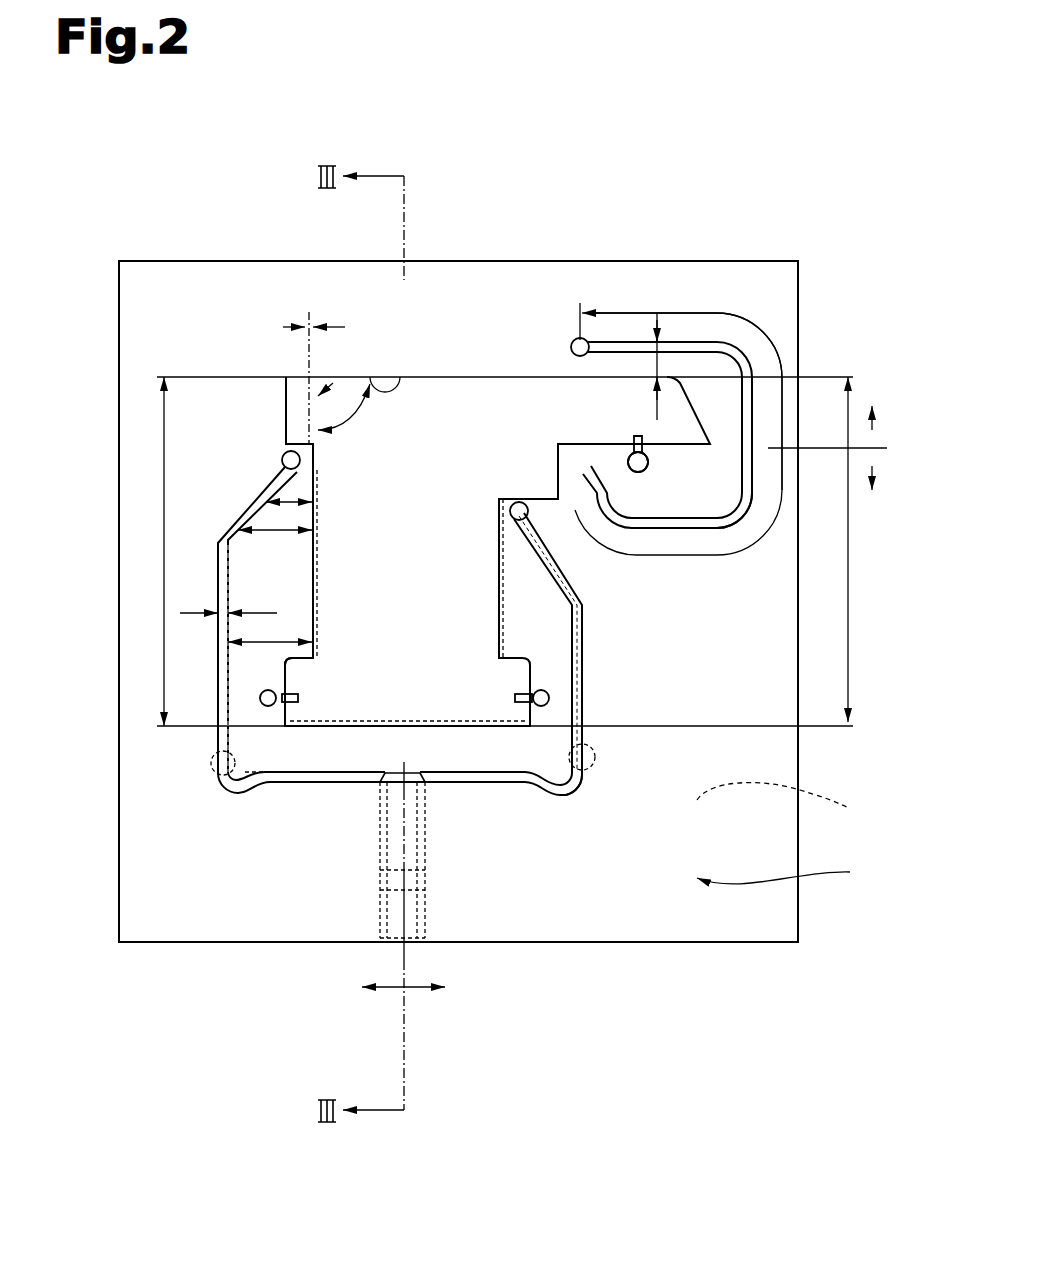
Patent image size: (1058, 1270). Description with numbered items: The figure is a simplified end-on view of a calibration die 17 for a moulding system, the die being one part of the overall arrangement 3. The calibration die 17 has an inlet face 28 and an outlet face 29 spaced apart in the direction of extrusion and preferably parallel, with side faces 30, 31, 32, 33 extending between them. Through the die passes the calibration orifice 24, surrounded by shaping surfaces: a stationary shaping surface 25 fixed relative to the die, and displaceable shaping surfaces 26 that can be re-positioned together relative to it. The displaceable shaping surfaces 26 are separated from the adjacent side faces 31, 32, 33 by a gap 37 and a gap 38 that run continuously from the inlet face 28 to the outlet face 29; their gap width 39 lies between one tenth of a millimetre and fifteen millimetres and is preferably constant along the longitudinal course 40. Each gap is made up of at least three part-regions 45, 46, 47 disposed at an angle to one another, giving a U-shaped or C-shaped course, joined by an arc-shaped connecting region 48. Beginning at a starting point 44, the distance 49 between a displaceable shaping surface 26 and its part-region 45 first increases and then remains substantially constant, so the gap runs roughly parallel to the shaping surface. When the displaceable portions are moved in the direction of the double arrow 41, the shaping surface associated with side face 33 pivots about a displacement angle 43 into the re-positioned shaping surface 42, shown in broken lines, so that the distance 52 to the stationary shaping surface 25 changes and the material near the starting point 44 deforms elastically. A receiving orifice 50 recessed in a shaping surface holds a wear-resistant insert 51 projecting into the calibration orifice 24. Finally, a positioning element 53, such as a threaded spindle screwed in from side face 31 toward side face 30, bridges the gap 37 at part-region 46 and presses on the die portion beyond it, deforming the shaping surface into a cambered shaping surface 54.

The holding device 3 is at (747, 132).
The calibration die 17 is at (783, 289).
The calibration orifice 24 is at (432, 393).
The stationary shaping surface 25 is at (372, 377).
The displaceable shaping surface 26 is at (650, 380).
The inlet face 28 is at (787, 873).
The outlet face 29 is at (787, 803).
The side face 30 is at (450, 256).
The side face 31 is at (614, 944).
The side face 32 is at (800, 772).
The side face 33 is at (117, 866).
The gap 37 is at (490, 786).
The gap 38 is at (722, 335).
The gap width 39 is at (198, 612).
The longitudinal course 40 is at (630, 335).
The double arrow 41 is at (874, 440).
The re-positioned shaping surface 42 is at (320, 548).
The displacement angle 43 is at (283, 326).
The starting point 44 is at (574, 335).
The part-region 45 is at (657, 313).
The part-region 46 is at (308, 795).
The part-region 47 is at (695, 545).
The connecting region 48 is at (588, 800).
The distance 49 is at (652, 362).
The receiving orifice 50 is at (270, 708).
The wear-resistant insert 51 is at (645, 478).
The distance 52 is at (166, 512).
The positioning element 53 is at (370, 913).
The cambered shaping surface 54 is at (440, 720).